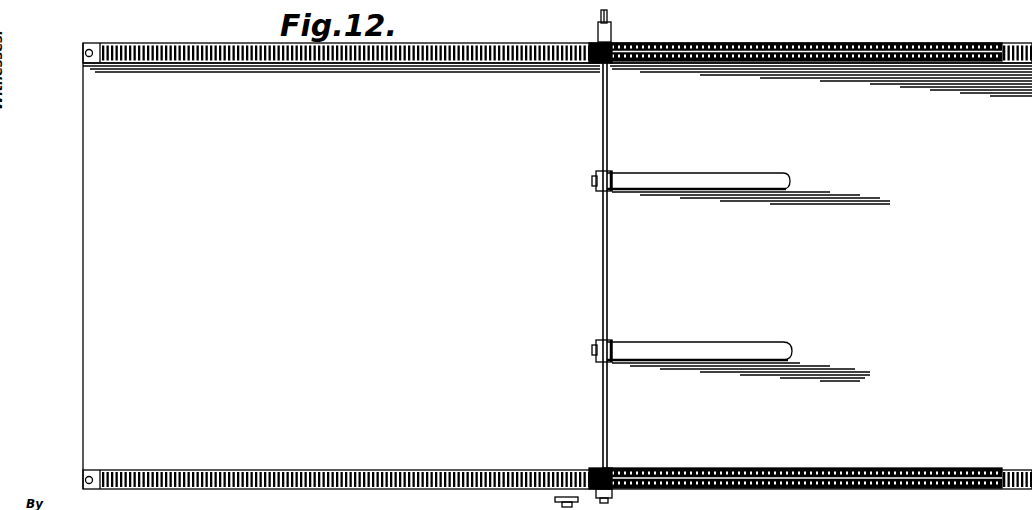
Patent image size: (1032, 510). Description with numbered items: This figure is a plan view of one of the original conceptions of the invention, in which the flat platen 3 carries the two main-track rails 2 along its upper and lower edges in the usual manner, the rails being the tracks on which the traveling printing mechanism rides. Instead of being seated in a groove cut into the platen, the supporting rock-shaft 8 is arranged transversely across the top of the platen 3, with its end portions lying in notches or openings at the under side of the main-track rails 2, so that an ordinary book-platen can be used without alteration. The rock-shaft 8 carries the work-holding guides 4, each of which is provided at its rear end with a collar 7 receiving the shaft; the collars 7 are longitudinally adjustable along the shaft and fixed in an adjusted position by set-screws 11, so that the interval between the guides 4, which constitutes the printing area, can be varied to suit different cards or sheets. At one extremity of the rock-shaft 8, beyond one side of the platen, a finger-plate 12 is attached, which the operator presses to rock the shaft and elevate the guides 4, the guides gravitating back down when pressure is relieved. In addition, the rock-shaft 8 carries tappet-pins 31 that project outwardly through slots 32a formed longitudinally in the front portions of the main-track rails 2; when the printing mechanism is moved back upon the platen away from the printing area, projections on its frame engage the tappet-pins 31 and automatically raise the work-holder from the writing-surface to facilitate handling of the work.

The main-track rails 2 is at (264, 65).
The flat platen 3 is at (557, 266).
The work-holding guides 4 is at (700, 186).
The collars 7 is at (597, 191).
The supporting rock-shaft 8 is at (608, 133).
The set-screws 11 is at (592, 181).
The finger-plate 12 is at (611, 15).
The tappet-pins 31 is at (598, 63).
The slots 32a is at (856, 470).